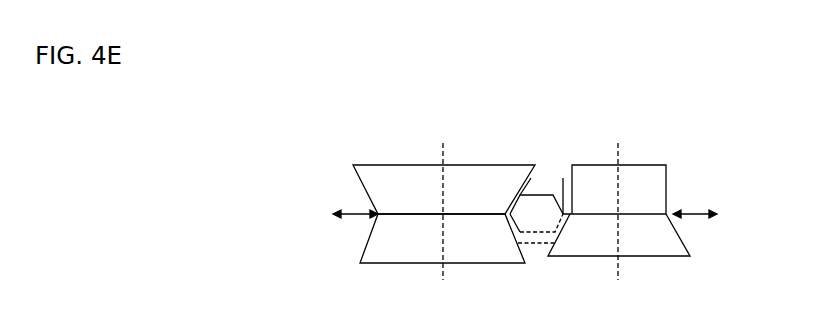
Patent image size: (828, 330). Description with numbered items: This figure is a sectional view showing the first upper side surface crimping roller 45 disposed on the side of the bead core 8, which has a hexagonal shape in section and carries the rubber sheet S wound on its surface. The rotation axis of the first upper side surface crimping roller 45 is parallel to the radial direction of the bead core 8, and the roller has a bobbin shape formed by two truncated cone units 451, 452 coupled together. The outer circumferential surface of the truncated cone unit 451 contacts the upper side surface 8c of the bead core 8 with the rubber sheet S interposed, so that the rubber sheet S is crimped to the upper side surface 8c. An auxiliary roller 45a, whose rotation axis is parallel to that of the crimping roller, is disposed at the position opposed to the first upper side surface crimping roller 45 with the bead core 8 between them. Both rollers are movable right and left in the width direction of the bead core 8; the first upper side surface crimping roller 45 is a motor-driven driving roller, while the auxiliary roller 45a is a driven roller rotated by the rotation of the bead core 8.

The first upper side surface crimping roller 45 is at (409, 191).
The truncated cone unit 451 is at (362, 193).
The truncated cone unit 452 is at (368, 237).
The auxiliary roller 45a is at (645, 165).
The bead core 8 is at (537, 203).
The upper side surface 8c is at (512, 200).
The rubber sheet S is at (563, 180).